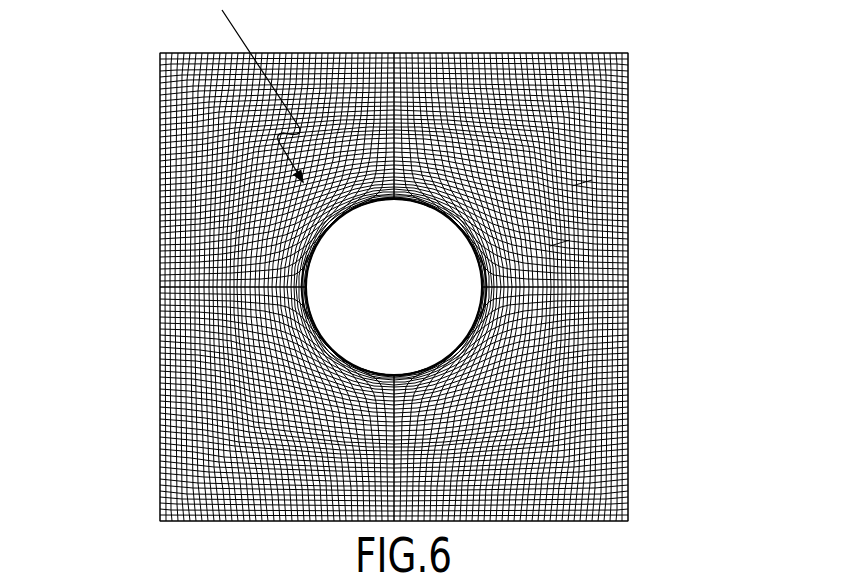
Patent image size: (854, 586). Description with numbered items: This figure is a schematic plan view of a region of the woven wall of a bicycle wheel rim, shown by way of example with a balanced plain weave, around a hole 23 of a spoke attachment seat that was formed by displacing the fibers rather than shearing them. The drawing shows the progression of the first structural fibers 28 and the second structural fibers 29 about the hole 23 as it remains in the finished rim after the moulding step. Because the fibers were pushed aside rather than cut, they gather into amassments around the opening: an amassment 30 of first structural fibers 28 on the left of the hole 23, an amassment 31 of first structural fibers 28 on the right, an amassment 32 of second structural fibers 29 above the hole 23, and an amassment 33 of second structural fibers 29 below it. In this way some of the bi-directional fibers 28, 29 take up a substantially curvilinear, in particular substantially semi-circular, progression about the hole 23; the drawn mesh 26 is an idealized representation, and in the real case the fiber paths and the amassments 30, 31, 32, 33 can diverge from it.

The hole 23 is at (372, 295).
The computational mesh 26 is at (200, 132).
The first structural fibers 28 is at (558, 243).
The second structural fibers 29 is at (582, 183).
The amassment of first structural fibers 30 is at (298, 292).
The amassment of first structural fibers 31 is at (502, 299).
The amassment of second structural fibers 32 is at (427, 190).
The amassment of second structural fibers 33 is at (377, 385).